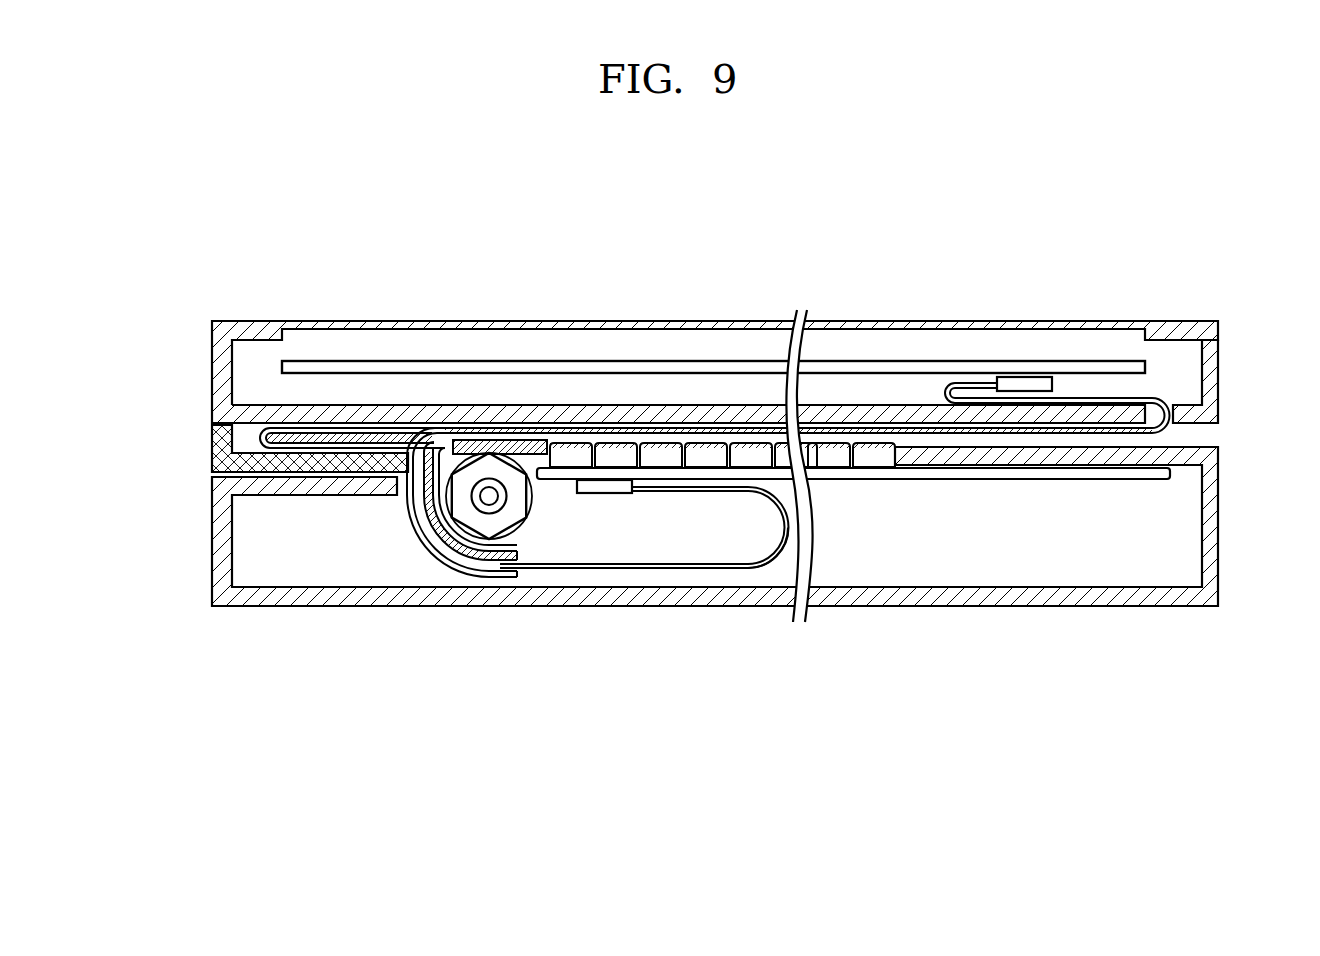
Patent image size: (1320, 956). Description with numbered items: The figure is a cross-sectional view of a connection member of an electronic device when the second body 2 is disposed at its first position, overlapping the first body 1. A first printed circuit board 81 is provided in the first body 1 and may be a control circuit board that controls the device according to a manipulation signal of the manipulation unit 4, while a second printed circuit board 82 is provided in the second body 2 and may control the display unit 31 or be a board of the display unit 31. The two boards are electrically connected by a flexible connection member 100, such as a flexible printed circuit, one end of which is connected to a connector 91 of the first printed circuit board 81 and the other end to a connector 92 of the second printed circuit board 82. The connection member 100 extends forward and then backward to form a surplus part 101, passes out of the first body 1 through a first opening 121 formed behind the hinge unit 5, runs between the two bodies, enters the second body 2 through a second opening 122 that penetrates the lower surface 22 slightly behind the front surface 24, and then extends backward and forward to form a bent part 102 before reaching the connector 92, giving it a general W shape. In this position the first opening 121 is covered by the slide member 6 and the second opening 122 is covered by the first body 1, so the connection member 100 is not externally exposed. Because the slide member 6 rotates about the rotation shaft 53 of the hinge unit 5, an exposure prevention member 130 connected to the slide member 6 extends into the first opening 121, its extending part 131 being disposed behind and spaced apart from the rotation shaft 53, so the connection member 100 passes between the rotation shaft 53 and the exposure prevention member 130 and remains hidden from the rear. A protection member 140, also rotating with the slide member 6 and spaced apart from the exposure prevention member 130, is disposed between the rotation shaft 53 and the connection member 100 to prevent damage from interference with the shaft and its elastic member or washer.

The first body 1 is at (200, 544).
The second body 2 is at (200, 370).
The manipulation unit 4 is at (876, 443).
The hinge unit 5 is at (501, 552).
The slide member 6 is at (212, 446).
The lower surface 22 is at (1205, 427).
The front surface 24 is at (1218, 374).
The display unit 31 is at (535, 333).
The rotation shaft 53 is at (489, 500).
The first printed circuit board 81 is at (930, 480).
The second printed circuit board 82 is at (367, 358).
The connector 91 is at (605, 494).
The connector 92 is at (1023, 377).
The connection member 100 is at (671, 569).
The surplus part 101 is at (788, 548).
The bent part 102 is at (935, 386).
The first opening 121 is at (446, 534).
The second opening 122 is at (1170, 408).
The exposure prevention member 130 is at (706, 540).
The extending part 131 is at (412, 533).
The protection member 140 is at (434, 530).